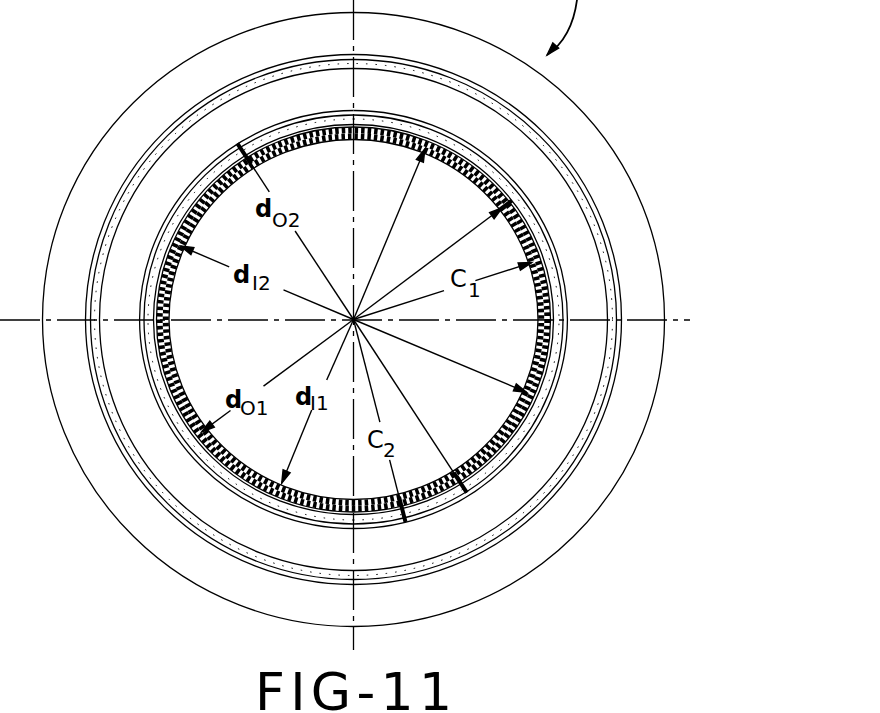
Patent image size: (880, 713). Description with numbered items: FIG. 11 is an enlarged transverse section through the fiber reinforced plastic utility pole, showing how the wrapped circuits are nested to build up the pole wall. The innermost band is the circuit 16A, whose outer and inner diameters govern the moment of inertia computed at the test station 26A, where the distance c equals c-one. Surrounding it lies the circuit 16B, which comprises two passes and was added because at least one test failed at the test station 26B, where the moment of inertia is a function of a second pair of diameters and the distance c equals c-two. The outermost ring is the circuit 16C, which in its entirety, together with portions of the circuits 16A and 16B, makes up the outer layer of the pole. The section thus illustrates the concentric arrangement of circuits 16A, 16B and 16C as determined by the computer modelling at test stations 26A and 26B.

The circuit 16A is at (250, 487).
The circuit 16B is at (283, 512).
The circuit 16C is at (541, 505).
The test station 26A is at (493, 169).
The test station 26B is at (212, 163).